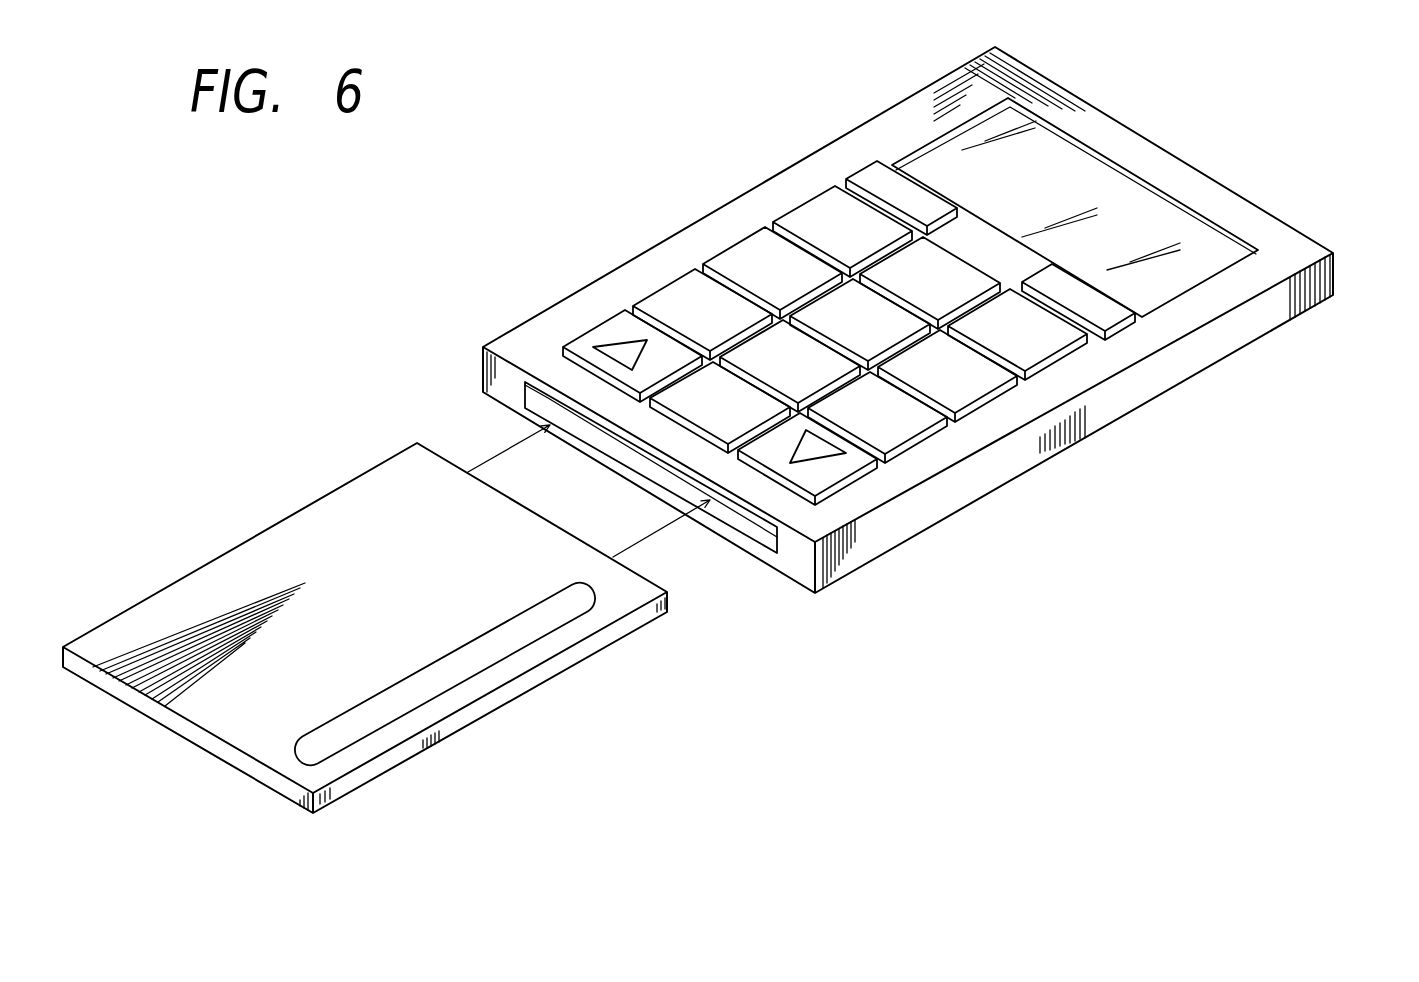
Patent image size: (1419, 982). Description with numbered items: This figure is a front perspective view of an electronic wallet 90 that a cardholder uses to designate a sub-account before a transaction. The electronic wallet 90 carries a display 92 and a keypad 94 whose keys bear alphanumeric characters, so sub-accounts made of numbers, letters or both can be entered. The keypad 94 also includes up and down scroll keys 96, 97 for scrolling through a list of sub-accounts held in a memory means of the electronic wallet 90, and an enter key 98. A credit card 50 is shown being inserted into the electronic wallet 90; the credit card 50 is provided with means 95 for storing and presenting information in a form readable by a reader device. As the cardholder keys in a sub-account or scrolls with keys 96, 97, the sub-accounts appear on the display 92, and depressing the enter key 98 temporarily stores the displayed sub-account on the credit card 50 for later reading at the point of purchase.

The electronic wallet 90 is at (947, 320).
The display 92 is at (1143, 222).
The keypad 94 is at (905, 355).
The means for storing and presenting information 95 is at (467, 667).
The up scroll key 96 is at (613, 353).
The down scroll key 97 is at (822, 432).
The enter key 98 is at (680, 400).
The credit card 50 is at (370, 628).